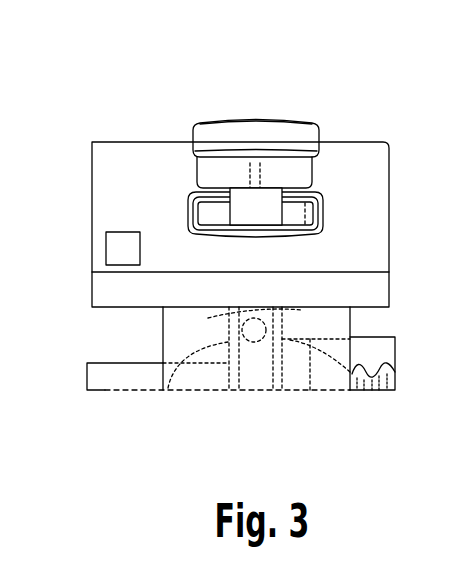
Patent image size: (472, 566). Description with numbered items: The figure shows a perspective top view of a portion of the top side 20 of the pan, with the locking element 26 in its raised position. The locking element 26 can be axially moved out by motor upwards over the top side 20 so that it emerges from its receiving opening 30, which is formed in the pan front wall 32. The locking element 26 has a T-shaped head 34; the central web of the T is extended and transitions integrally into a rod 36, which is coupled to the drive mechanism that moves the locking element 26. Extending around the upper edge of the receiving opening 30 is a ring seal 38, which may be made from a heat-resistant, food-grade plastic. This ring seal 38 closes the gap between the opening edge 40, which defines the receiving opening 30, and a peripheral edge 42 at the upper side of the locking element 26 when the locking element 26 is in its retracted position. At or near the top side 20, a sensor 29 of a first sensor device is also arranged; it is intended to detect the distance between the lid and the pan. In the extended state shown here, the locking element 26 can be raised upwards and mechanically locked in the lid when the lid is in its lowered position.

The top side 20 is at (373, 163).
The locking element 26 is at (292, 110).
The sensor 29 is at (118, 250).
The receiving opening 30 is at (318, 195).
The pan front wall 32 is at (375, 263).
The T-shaped head 34 is at (217, 120).
The rod 36 is at (257, 367).
The ring seal 38 is at (197, 193).
The opening edge 40 is at (191, 222).
The peripheral edge 42 is at (245, 122).